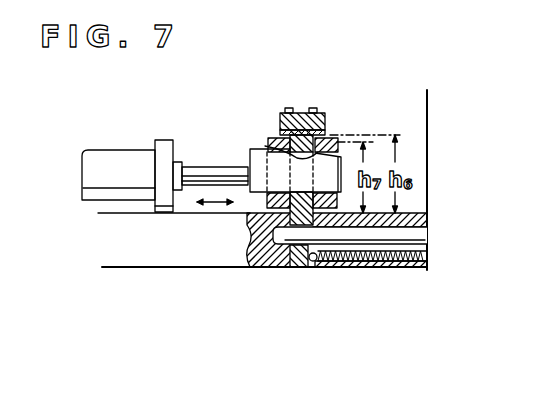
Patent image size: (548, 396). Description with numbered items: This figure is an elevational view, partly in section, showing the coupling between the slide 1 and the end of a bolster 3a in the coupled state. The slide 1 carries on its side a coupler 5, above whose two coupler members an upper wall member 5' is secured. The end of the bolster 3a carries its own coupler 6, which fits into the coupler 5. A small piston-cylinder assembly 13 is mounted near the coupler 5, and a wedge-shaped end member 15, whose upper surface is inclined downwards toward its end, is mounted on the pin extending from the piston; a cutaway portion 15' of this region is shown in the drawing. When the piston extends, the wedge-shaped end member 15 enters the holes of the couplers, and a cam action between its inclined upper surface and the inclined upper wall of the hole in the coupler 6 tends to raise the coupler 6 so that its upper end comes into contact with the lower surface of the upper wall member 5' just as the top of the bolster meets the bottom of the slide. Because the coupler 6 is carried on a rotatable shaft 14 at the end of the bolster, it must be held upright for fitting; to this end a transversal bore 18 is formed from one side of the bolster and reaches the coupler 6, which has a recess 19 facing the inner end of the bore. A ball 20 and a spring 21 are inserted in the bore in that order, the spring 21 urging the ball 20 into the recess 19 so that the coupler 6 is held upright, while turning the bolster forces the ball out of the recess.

The slide 1 is at (418, 119).
The bolster 3a is at (175, 252).
The coupler 5 is at (304, 171).
The upper wall member 5' is at (304, 164).
The coupler 6 is at (293, 268).
The piston-cylinder assembly 13 is at (126, 163).
The shaft 14 is at (413, 235).
The wedge-shaped end member 15 is at (267, 162).
The clamp cutaway portion 15' is at (304, 184).
The transversal bore 18 is at (390, 268).
The recess 19 is at (308, 267).
The ball 20 is at (315, 262).
The spring 21 is at (353, 262).